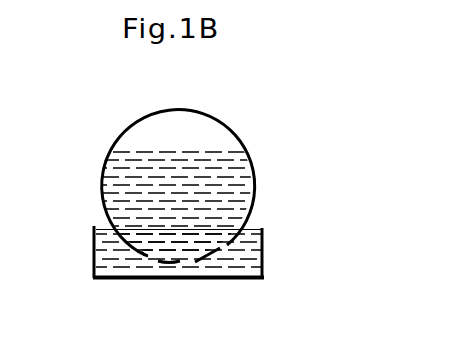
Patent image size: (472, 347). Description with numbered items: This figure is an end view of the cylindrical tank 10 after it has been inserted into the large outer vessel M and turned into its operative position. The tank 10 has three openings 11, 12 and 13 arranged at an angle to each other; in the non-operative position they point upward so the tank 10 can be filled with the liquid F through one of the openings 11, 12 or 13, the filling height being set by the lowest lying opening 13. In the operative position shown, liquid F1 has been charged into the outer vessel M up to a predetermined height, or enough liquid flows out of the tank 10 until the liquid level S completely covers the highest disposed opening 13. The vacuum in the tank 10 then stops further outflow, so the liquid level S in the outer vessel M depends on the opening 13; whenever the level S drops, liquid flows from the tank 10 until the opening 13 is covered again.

The cylindrical tank 10 is at (100, 193).
The outer vessel M is at (92, 265).
The liquid F is at (207, 207).
The liquid level S is at (245, 238).
The liquid in outer vessel F1 is at (233, 260).
The opening 11 is at (153, 261).
The opening 12 is at (189, 262).
The opening 13 is at (226, 246).